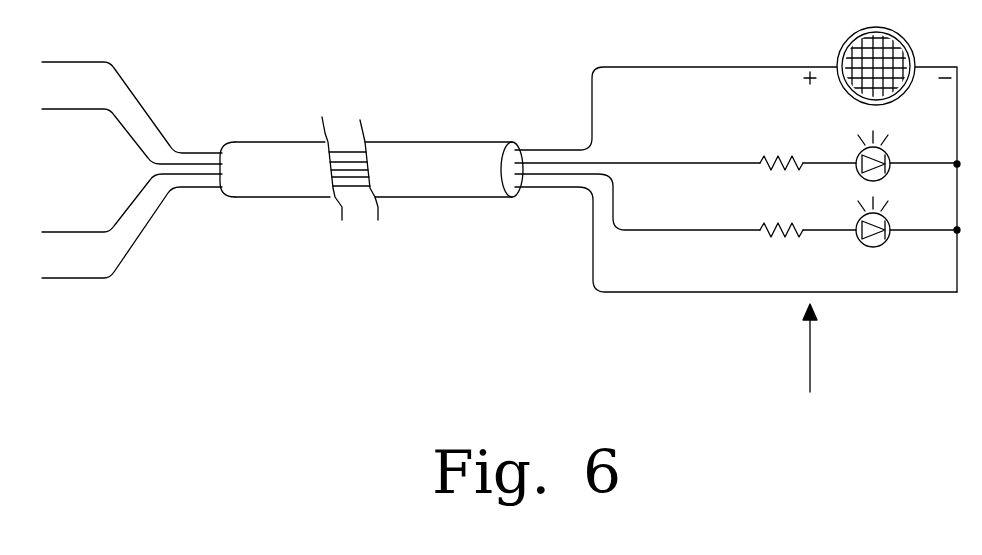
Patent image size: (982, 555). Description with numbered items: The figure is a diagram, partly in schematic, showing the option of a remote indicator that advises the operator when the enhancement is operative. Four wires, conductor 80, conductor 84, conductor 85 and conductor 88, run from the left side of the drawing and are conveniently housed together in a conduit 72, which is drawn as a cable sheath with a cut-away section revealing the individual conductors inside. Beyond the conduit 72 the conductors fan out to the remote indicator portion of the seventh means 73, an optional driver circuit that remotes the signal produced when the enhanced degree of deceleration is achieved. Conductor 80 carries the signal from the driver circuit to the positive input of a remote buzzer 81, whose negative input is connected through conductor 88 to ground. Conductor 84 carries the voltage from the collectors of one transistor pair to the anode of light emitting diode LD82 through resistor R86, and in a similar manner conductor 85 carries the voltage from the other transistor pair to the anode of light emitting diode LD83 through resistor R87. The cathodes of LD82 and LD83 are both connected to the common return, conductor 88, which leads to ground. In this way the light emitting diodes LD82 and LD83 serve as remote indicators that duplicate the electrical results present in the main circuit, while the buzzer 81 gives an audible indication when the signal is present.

The conductor 80 is at (591, 88).
The conductor 84 is at (657, 161).
The conductor 85 is at (653, 233).
The conductor 88 is at (597, 294).
The conduit 72 is at (453, 181).
The seventh means 73 is at (826, 427).
The remote buzzer 81 is at (838, 54).
The resistor R86 is at (781, 150).
The resistor R87 is at (782, 217).
The light emitting diode LD82 is at (908, 163).
The light emitting diode LD83 is at (908, 229).